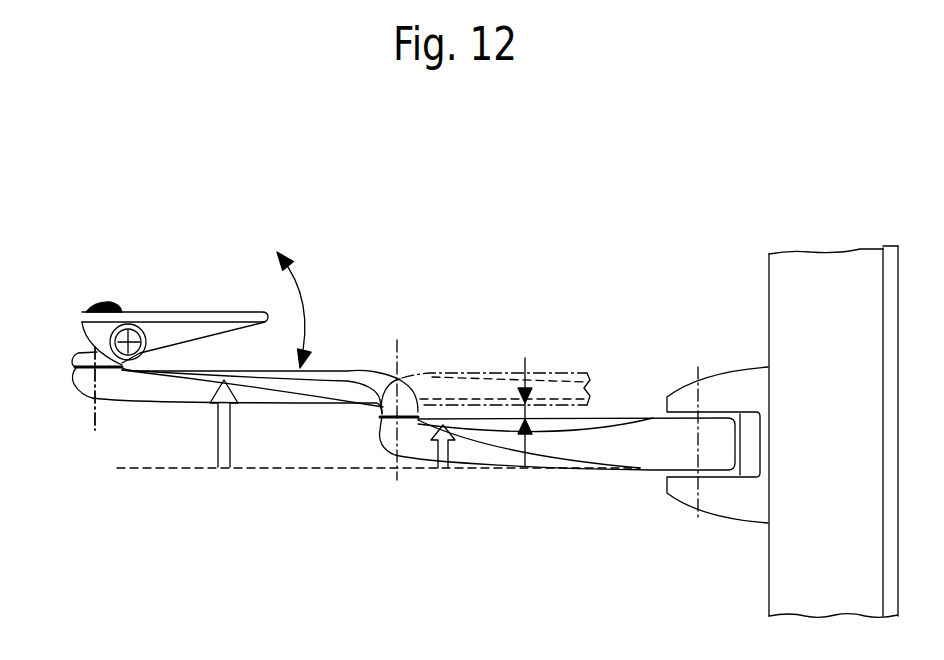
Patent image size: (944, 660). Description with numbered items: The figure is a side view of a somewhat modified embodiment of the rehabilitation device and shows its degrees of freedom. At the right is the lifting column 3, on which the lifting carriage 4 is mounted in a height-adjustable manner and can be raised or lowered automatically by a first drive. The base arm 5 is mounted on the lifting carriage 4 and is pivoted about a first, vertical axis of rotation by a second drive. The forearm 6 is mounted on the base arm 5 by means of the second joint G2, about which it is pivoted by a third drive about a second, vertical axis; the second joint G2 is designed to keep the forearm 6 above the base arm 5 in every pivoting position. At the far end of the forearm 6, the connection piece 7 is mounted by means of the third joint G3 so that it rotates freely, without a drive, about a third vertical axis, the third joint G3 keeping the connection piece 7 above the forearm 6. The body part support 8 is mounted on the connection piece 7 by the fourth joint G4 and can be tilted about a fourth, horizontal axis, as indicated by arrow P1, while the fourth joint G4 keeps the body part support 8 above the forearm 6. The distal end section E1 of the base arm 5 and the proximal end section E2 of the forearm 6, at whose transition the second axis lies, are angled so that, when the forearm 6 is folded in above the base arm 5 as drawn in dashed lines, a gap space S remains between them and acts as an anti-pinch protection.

The lifting column 3 is at (836, 278).
The lifting carriage 4 is at (723, 388).
The base arm 5 is at (583, 445).
The forearm 6 is at (318, 377).
The connection piece 7 is at (88, 357).
The body part support 8 is at (211, 320).
The second joint G2 is at (386, 422).
The third joint G3 is at (83, 393).
The fourth joint G4 is at (137, 326).
The distal end section E1 is at (407, 428).
The proximal end section E2 is at (408, 400).
The gap space S is at (528, 414).
The arrow P1 is at (300, 305).